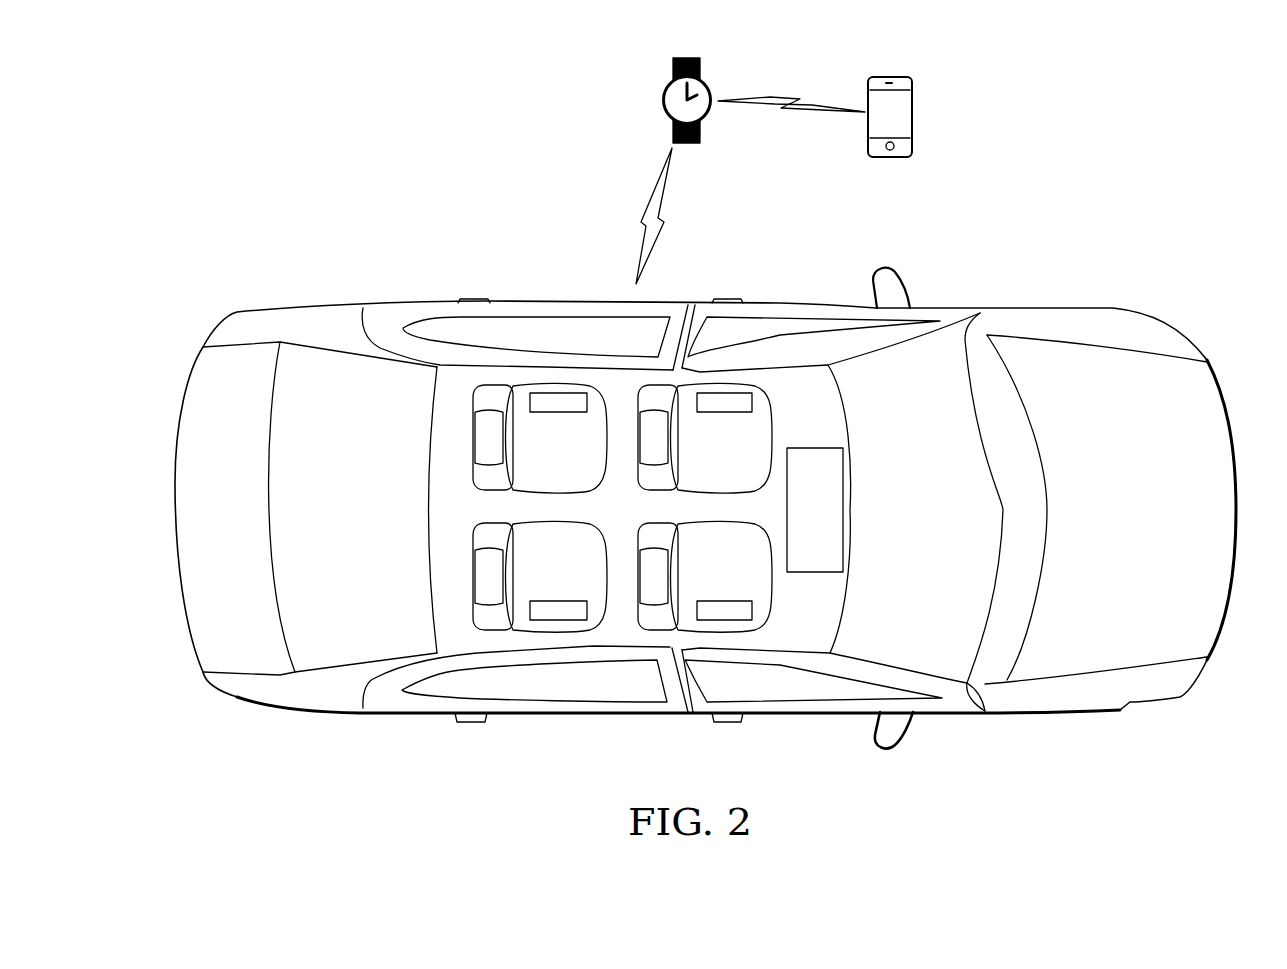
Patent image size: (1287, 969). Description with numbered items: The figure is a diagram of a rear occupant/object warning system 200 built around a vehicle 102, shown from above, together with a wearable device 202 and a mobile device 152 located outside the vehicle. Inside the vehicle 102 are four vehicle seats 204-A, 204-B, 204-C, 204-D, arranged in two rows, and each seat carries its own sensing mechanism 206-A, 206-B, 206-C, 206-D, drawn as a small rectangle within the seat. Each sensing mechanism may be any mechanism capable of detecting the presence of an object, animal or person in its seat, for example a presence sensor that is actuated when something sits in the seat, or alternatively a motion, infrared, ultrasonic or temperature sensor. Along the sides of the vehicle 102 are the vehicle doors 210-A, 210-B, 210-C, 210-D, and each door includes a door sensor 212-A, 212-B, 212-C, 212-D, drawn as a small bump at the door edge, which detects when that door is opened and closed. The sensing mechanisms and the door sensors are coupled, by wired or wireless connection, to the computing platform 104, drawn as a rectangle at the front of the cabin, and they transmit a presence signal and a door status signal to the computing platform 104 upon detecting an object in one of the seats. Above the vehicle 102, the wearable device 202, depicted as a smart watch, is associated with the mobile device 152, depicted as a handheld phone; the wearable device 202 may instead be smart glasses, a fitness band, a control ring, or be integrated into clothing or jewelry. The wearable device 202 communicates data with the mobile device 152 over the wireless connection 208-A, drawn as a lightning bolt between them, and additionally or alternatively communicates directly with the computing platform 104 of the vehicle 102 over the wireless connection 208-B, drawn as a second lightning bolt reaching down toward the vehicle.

The vehicle 102 is at (349, 309).
The computing platform 104 is at (844, 512).
The mobile device 152 is at (914, 118).
The rear occupant/object warning system 200 is at (480, 191).
The wearable device 202 is at (662, 97).
The vehicle seat 204-A is at (772, 440).
The vehicle seat 204-B is at (772, 576).
The vehicle seat 204-C is at (473, 587).
The vehicle seat 204-D is at (473, 437).
The sensing mechanism 206-A is at (708, 413).
The sensing mechanism 206-B is at (737, 600).
The sensing mechanism 206-C is at (572, 600).
The sensing mechanism 206-D is at (543, 413).
The wireless connection 208-A is at (748, 97).
The wireless connection 208-B is at (654, 190).
The vehicle door 210-A is at (802, 306).
The vehicle door 210-B is at (797, 717).
The vehicle door 210-C is at (422, 718).
The vehicle door 210-D is at (541, 300).
The door sensor 212-A is at (725, 299).
The door sensor 212-B is at (727, 723).
The door sensor 212-C is at (462, 723).
The door sensor 212-D is at (466, 299).